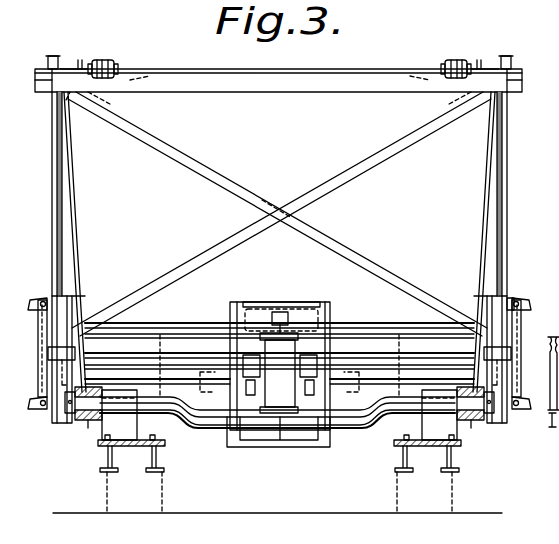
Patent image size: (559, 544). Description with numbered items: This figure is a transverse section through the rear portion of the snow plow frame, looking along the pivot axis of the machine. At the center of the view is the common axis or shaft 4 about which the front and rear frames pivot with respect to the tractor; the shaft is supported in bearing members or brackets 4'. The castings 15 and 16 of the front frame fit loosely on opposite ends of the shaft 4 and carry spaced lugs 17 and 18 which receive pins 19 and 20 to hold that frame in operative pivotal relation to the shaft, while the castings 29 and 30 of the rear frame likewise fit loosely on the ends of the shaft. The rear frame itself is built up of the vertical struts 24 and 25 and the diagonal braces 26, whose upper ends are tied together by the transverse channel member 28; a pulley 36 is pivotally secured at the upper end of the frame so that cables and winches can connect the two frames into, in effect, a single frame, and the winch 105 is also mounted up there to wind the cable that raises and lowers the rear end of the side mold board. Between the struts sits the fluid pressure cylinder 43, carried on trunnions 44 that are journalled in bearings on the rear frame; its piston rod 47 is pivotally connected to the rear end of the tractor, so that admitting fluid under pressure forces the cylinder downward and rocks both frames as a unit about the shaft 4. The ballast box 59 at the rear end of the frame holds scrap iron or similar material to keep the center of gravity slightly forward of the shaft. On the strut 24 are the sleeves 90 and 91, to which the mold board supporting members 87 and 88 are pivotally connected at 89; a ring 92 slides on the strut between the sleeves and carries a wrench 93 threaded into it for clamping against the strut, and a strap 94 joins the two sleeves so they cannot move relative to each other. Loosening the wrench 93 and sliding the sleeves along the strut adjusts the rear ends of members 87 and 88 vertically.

The shaft 4 is at (277, 422).
The bearing members or brackets 4' is at (279, 402).
The casting 15 is at (478, 414).
The casting 16 is at (89, 422).
The spaced lugs 17 is at (457, 390).
The spaced lugs 18 is at (102, 390).
The pin 19 is at (466, 388).
The pin 20 is at (95, 388).
The vertical strut 24 is at (504, 248).
The vertical strut 25 is at (56, 251).
The diagonal brace 26 is at (76, 216).
The transverse channel member 28 is at (306, 73).
The casting 29 is at (474, 422).
The casting 30 is at (73, 412).
The pulley 36 is at (110, 62).
The fluid pressure cylinder 43 is at (292, 356).
The trunnions 44 is at (250, 359).
The piston rod 47 is at (275, 328).
The ballast box 59 is at (378, 321).
The member 87 is at (520, 303).
The member 88 is at (522, 404).
The pivotal connection 89 is at (518, 307).
The sleeve 90 is at (510, 300).
The sleeve 91 is at (500, 386).
The ring 92 is at (511, 352).
The wrench 93 is at (514, 366).
The strap 94 is at (521, 337).
The winch 105 is at (488, 62).